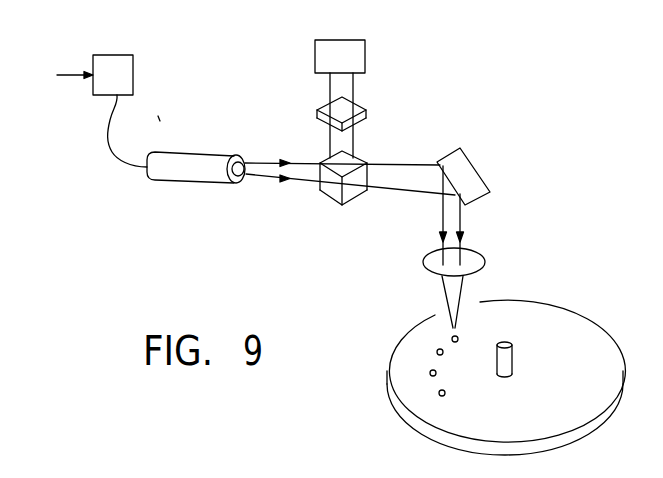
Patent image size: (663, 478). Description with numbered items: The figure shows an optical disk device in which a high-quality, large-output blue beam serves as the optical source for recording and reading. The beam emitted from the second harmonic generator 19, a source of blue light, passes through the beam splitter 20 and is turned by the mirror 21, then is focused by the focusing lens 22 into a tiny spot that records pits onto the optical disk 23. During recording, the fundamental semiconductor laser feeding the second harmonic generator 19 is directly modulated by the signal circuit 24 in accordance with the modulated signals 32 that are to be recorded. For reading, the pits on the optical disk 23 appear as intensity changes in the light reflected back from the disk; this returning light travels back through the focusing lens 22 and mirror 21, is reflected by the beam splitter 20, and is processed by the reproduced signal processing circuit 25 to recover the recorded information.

The second harmonic generator 19 is at (200, 155).
The beam splitter 20 is at (325, 197).
The mirror 21 is at (480, 168).
The focusing lens 22 is at (482, 254).
The optical disk 23 is at (573, 313).
The signal circuit 24 is at (115, 53).
The reproduced signal processing circuit 25 is at (338, 39).
The modulated signals 32 is at (60, 77).